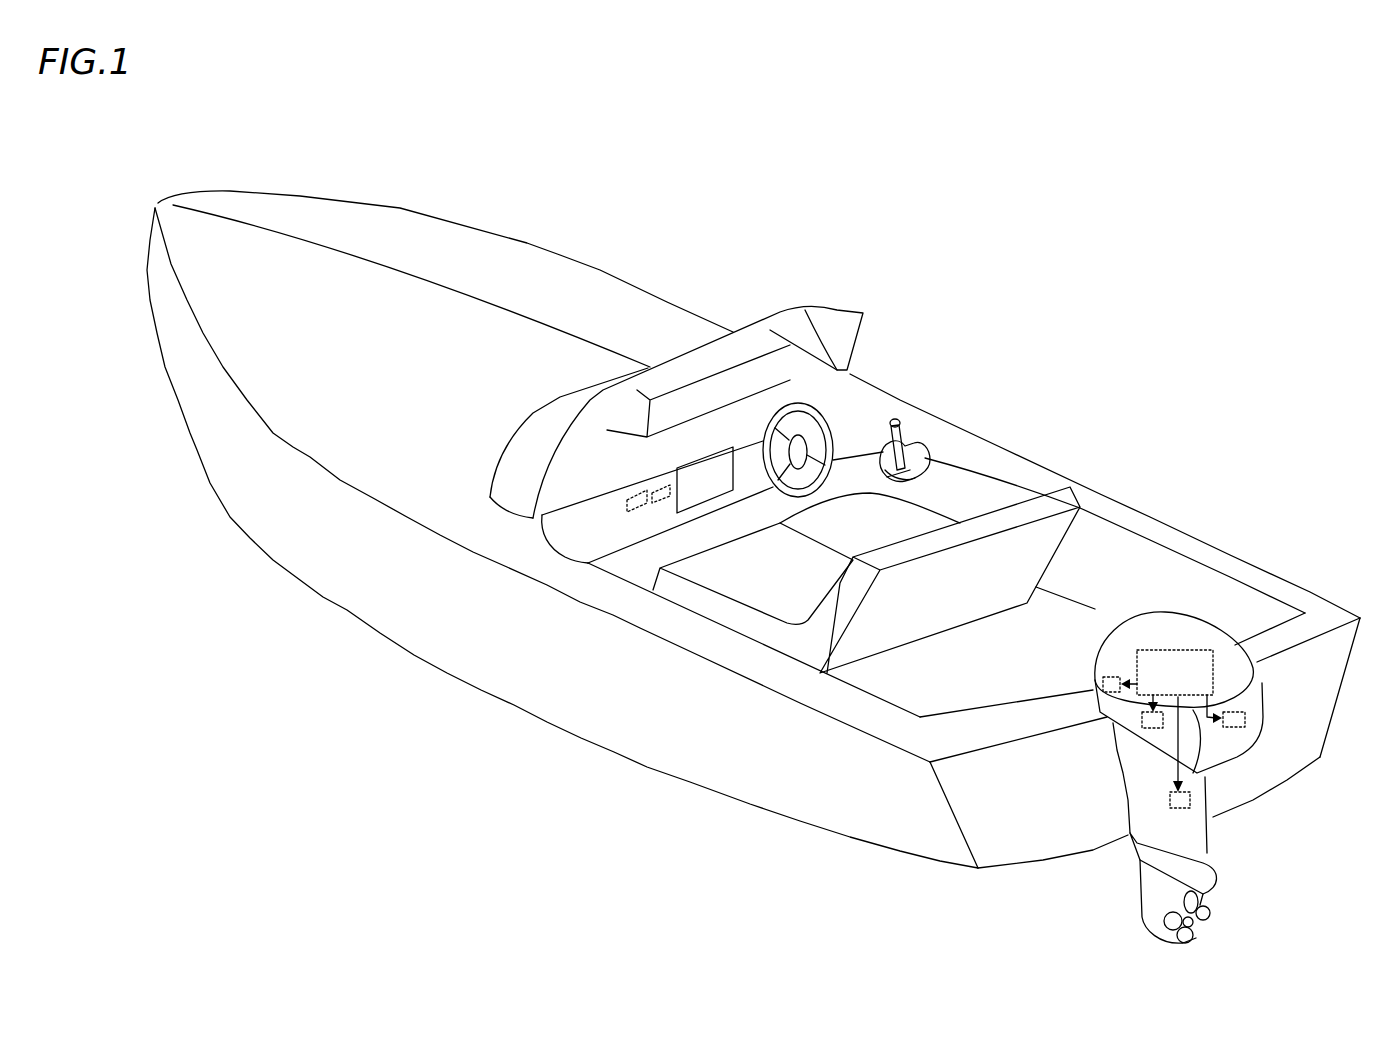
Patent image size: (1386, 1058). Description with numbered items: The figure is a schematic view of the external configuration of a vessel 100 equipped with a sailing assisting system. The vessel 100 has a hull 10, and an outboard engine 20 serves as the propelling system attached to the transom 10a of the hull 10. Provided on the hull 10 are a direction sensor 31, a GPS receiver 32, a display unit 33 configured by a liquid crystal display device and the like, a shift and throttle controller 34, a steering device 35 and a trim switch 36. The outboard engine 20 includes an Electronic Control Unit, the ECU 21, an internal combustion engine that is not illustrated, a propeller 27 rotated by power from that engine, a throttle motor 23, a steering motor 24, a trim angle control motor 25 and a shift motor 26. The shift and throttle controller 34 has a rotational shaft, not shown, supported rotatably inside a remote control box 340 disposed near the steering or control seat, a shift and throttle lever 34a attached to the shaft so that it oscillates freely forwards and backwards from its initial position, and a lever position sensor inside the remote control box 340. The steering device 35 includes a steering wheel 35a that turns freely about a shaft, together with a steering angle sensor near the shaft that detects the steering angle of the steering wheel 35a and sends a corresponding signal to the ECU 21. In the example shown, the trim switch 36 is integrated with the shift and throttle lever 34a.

The vessel 100 is at (662, 167).
The hull 10 is at (441, 212).
The transom 10a is at (1043, 852).
The outboard engine 20 is at (1272, 718).
The Electronic Control Unit (ECU) 21 is at (1181, 648).
The throttle motor 23 is at (1235, 728).
The steering motor 24 is at (1155, 728).
The trim angle control motor 25 is at (1112, 675).
The shift motor 26 is at (1190, 800).
The propeller 27 is at (1203, 921).
The direction sensor 31 is at (661, 490).
The GPS receiver 32 is at (634, 498).
The display unit 33 is at (726, 452).
The shift and throttle controller 34 is at (918, 414).
The remote control box 340 is at (907, 425).
The shift and throttle lever 34a is at (923, 458).
The steering device 35 is at (838, 422).
The steering wheel 35a is at (813, 408).
The trim switch 36 is at (896, 420).